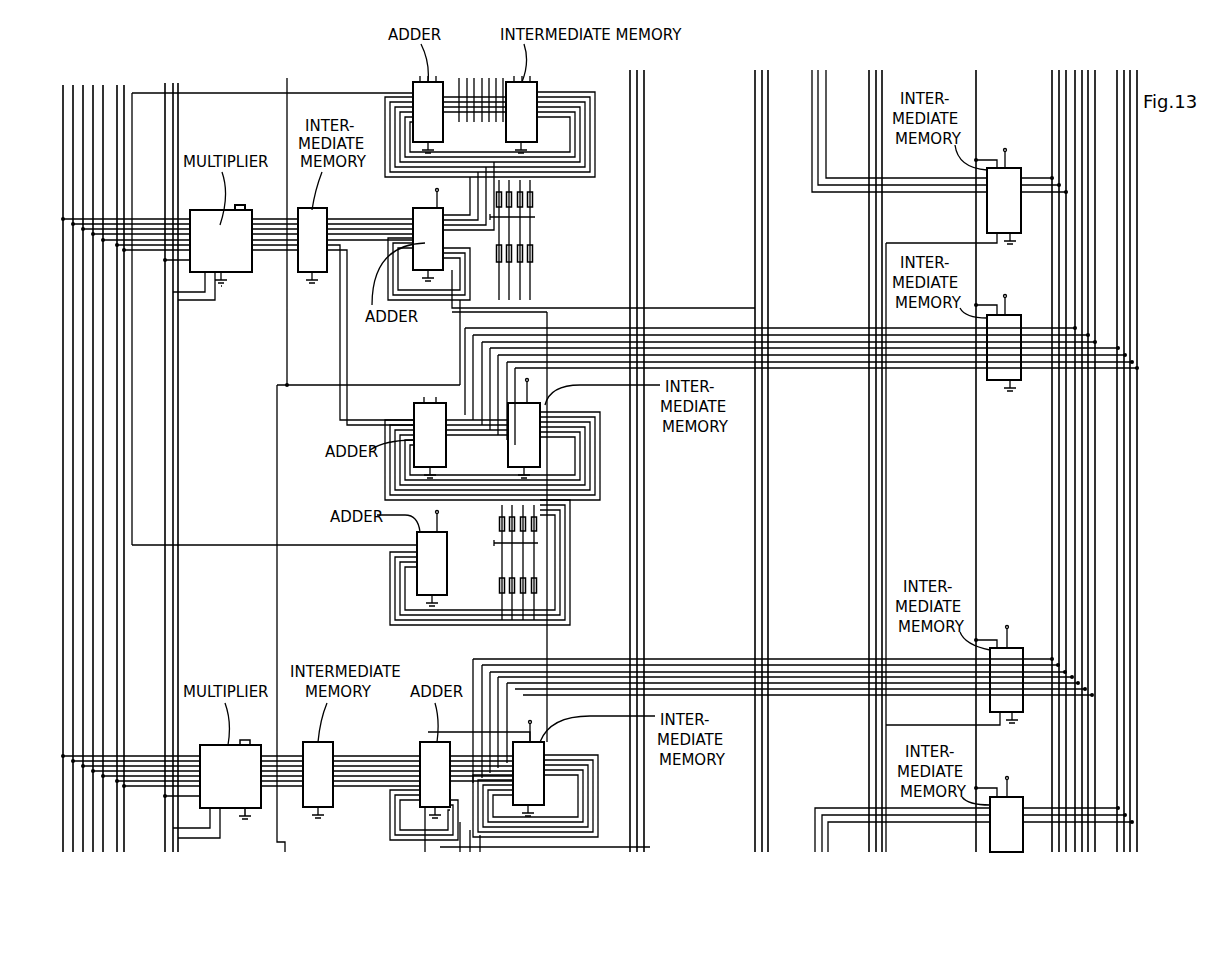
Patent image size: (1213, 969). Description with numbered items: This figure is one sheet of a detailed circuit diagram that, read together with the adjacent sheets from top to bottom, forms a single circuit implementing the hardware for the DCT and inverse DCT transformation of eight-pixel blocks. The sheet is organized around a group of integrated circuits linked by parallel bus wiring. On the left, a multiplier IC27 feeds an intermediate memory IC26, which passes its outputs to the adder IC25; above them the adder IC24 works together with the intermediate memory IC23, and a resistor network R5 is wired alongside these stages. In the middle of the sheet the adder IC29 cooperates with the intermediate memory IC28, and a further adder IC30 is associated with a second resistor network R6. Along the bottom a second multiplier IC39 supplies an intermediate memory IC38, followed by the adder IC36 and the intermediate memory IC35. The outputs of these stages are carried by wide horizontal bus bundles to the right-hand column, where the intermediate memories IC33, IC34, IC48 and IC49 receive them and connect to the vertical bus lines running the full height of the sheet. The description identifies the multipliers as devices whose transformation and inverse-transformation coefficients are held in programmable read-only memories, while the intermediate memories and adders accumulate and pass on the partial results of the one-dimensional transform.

The intermediate memory IC23 is at (539, 114).
The adder IC24 is at (411, 114).
The adder IC25 is at (417, 233).
The intermediate memory IC26 is at (327, 244).
The multiplier IC27 is at (220, 240).
The intermediate memory IC28 is at (543, 427).
The adder IC29 is at (413, 437).
The adder IC30 is at (418, 557).
The intermediate memory IC33 is at (1019, 195).
The intermediate memory IC34 is at (1015, 341).
The intermediate memory IC35 is at (546, 767).
The adder IC36 is at (416, 779).
The intermediate memory IC38 is at (334, 779).
The multiplier IC39 is at (230, 775).
The intermediate memory IC48 is at (1021, 673).
The intermediate memory IC49 is at (1020, 813).
The resistor network R5 is at (512, 240).
The resistor network R6 is at (516, 562).